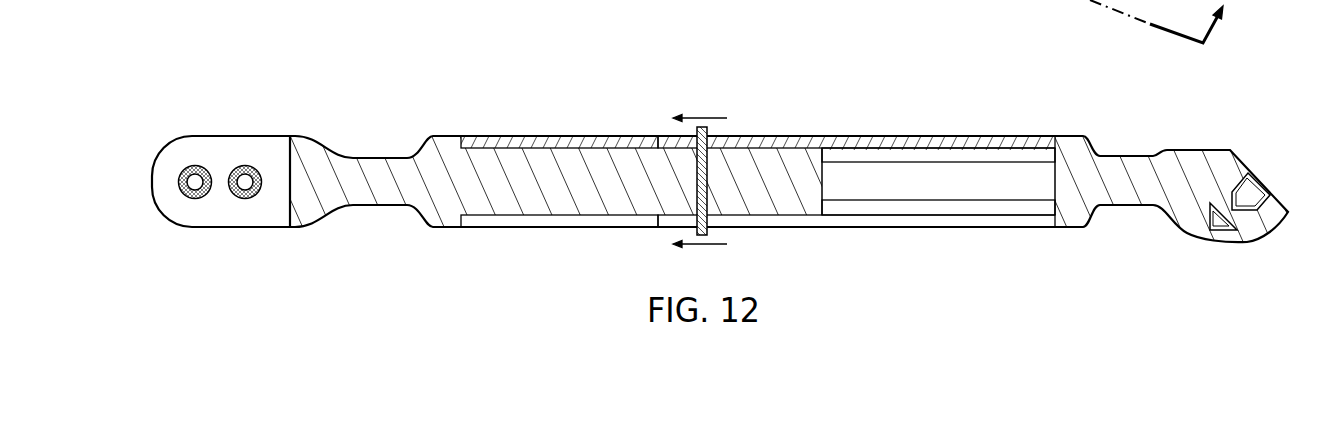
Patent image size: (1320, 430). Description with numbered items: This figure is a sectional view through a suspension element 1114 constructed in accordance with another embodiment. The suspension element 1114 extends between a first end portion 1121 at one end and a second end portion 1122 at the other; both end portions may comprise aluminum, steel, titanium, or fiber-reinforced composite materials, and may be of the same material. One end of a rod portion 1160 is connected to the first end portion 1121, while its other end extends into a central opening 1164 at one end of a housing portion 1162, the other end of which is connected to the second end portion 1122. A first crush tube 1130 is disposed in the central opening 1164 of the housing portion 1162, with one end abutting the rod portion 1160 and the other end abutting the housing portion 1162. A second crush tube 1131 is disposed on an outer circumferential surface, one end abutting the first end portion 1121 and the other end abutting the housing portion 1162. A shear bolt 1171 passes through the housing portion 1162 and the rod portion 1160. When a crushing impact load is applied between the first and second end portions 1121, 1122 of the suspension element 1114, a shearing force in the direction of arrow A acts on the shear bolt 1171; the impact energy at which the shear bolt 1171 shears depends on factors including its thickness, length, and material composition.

The suspension element 1114 is at (880, 94).
The first end portion 1121 is at (237, 134).
The second end portion 1122 is at (1225, 172).
The first crush tube 1130 is at (980, 208).
The second crush tube 1131 is at (563, 142).
The rod portion 1160 is at (440, 177).
The housing portion 1162 is at (938, 142).
The central opening 1164 is at (755, 207).
The shear bolt 1171 is at (700, 158).